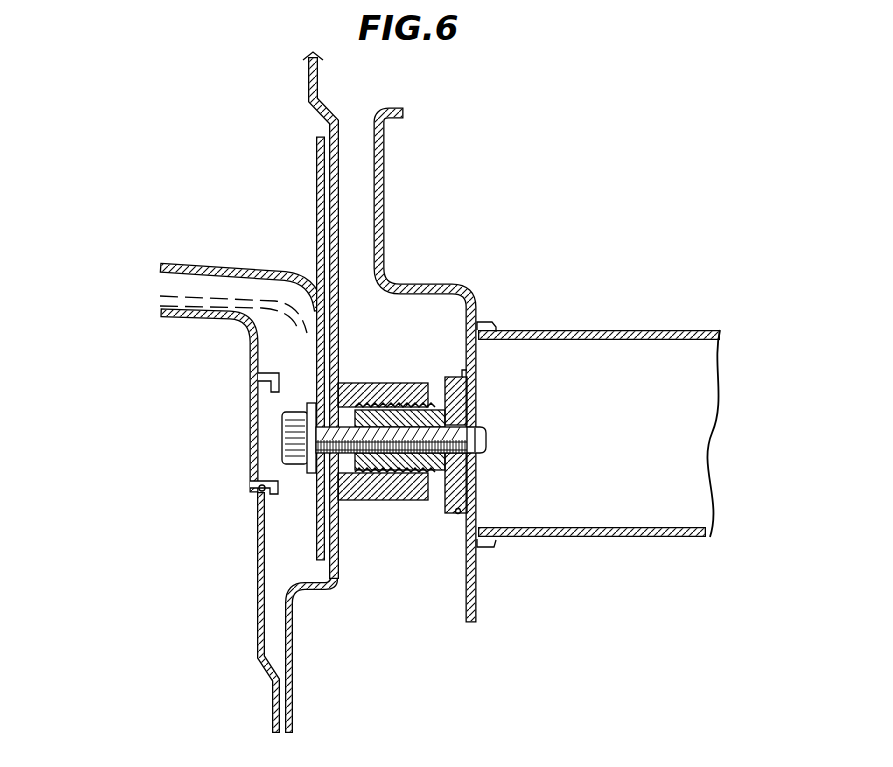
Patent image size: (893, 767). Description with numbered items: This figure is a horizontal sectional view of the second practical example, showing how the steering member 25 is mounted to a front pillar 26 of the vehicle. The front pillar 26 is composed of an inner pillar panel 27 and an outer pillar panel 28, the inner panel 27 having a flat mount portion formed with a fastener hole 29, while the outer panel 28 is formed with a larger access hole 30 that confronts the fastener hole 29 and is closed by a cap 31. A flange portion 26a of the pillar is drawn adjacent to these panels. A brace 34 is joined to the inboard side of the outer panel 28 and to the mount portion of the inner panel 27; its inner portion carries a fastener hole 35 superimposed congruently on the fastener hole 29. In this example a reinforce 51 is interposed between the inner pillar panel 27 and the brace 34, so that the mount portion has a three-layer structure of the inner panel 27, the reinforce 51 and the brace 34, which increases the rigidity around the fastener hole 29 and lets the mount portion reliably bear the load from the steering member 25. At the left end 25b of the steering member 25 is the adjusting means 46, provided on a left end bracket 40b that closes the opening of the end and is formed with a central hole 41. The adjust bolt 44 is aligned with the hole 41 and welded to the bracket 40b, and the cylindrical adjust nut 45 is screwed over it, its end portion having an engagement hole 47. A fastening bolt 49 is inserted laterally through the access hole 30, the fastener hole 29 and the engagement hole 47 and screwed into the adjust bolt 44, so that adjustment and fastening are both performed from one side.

The steering member 25 is at (712, 433).
The left end of the steering member 25b is at (540, 538).
The front pillar 26 is at (178, 572).
The panel flange 26a is at (332, 368).
The inner pillar panel 27 is at (262, 612).
The outer pillar panel 28 is at (257, 588).
The fastener hole 29 is at (283, 463).
The access hole 30 is at (250, 493).
The cap 31 is at (250, 413).
The brace 34 is at (229, 262).
The fastener hole of the brace 35 is at (294, 411).
The left end bracket 40b is at (385, 180).
The central hole 41 is at (477, 417).
The adjust bolt 44 is at (427, 383).
The adjust nut 45 is at (400, 383).
The adjusting means 46 is at (520, 248).
The engagement hole 47 is at (360, 470).
The fastening bolt 49 is at (281, 453).
The reinforce 51 is at (323, 193).